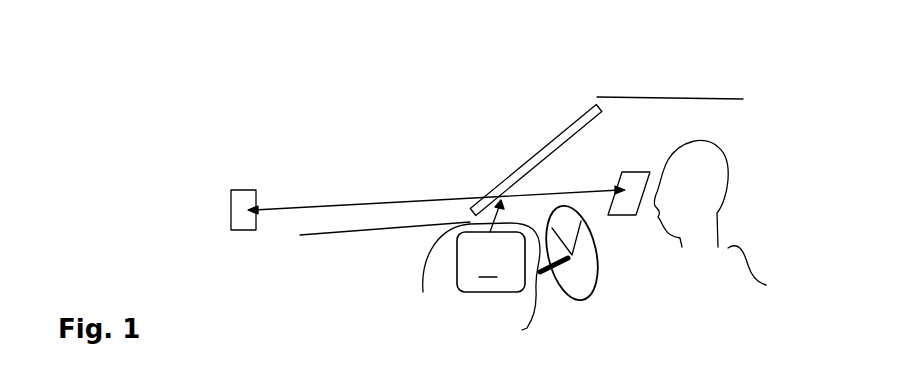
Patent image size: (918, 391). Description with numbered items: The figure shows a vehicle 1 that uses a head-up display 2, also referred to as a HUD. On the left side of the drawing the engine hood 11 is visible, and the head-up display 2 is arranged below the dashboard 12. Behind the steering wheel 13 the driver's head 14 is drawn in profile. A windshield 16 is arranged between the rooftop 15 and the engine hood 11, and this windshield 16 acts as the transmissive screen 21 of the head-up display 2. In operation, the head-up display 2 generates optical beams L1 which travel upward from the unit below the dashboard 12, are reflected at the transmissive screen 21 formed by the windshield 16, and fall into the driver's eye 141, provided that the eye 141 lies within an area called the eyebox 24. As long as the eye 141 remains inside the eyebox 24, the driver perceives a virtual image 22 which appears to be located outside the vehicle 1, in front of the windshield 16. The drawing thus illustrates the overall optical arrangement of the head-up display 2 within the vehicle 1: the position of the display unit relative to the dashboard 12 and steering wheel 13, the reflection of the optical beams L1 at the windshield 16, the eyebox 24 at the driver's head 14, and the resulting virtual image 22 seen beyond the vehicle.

The vehicle 1 is at (332, 237).
The engine hood 11 is at (387, 228).
The dashboard 12 is at (481, 286).
The steering wheel 13 is at (598, 297).
The driver's head 14 is at (724, 224).
The driver's eye 141 is at (668, 190).
The rooftop 15 is at (688, 88).
The windshield 16 is at (590, 104).
The head-up display 2 is at (491, 246).
The transmissive screen 21 is at (558, 131).
The virtual image 22 is at (228, 233).
The eyebox 24 is at (627, 218).
The optical beams L1 is at (408, 318).